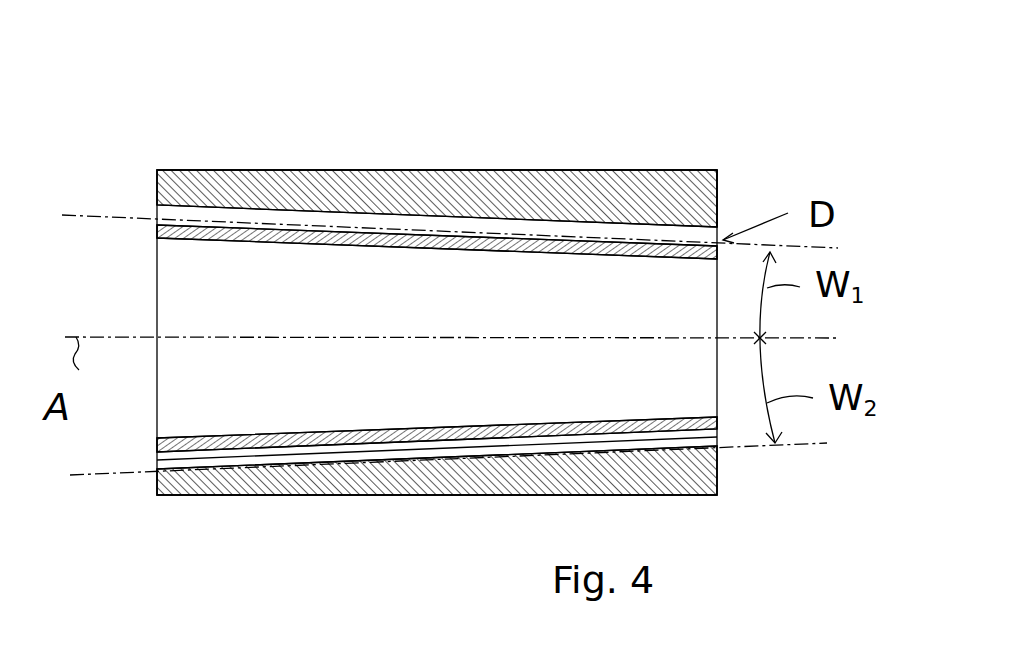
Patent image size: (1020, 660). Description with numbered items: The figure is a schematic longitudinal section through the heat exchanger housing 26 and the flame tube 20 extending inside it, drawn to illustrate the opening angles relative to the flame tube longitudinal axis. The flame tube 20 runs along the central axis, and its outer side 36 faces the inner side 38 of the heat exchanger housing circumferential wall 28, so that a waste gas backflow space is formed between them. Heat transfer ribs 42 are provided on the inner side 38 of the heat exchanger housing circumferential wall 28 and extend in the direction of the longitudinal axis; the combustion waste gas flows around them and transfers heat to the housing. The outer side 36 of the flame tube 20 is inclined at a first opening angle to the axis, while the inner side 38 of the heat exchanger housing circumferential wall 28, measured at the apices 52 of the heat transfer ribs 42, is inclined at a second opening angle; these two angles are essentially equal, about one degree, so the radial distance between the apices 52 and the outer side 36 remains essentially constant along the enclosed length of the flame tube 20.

The flame tube 20 is at (505, 243).
The heat exchanger housing 26 is at (355, 170).
The heat exchanger housing circumferential wall 28 is at (205, 168).
The outer side of the flame tube 36 is at (405, 447).
The inner side of the heat exchanger housing circumferential wall 38 is at (492, 447).
The heat transfer ribs 42 is at (718, 205).
The apices of the heat transfer ribs 52 is at (300, 458).